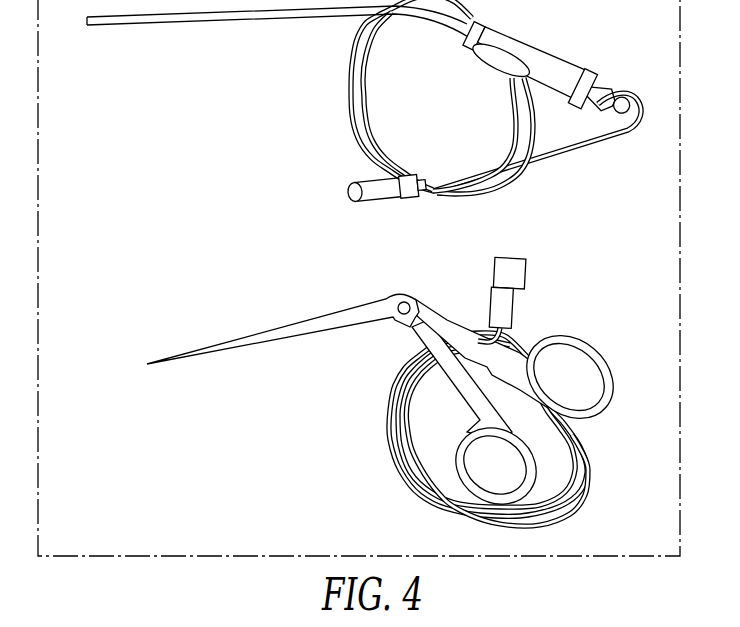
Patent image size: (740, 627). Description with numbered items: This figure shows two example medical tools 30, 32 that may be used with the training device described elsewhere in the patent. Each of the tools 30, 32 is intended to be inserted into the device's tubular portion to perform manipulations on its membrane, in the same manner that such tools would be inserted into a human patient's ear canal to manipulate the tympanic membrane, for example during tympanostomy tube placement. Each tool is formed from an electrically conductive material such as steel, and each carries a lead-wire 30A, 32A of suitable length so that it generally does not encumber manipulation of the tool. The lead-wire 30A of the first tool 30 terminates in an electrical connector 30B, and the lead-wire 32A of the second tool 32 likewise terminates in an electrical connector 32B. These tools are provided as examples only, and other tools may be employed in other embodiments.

The medical tool 30 is at (285, 18).
The lead-wire 30A is at (558, 152).
The electrical connector 30B is at (366, 180).
The medical tool 32 is at (395, 297).
The lead-wire 32A is at (393, 390).
The electrical connector 32B is at (515, 275).